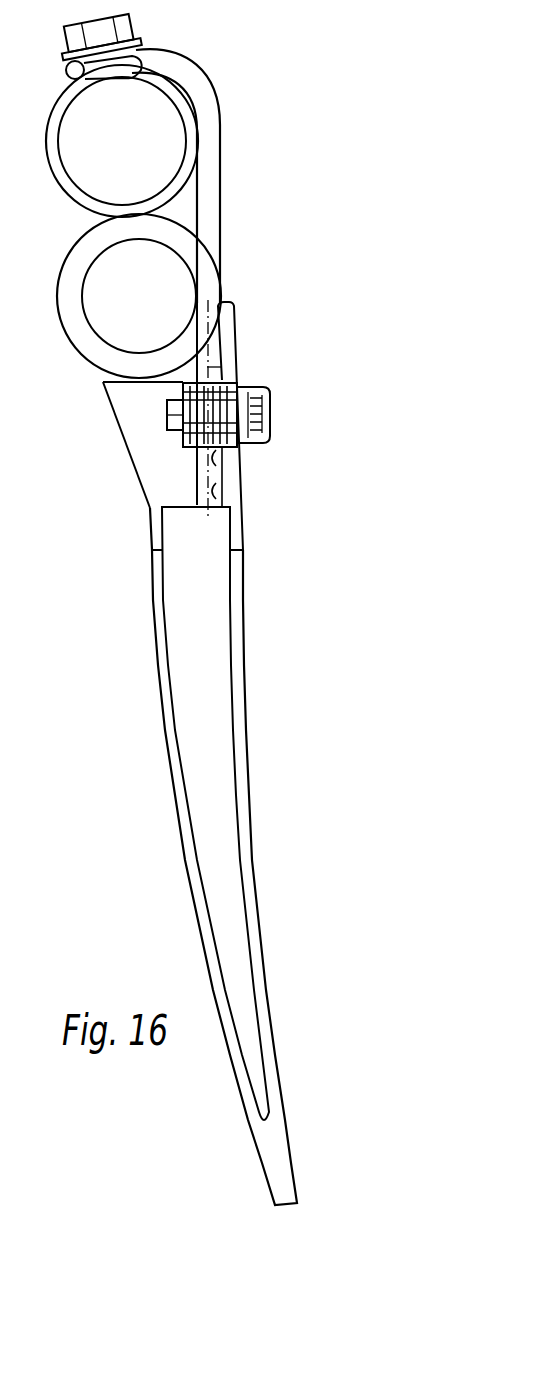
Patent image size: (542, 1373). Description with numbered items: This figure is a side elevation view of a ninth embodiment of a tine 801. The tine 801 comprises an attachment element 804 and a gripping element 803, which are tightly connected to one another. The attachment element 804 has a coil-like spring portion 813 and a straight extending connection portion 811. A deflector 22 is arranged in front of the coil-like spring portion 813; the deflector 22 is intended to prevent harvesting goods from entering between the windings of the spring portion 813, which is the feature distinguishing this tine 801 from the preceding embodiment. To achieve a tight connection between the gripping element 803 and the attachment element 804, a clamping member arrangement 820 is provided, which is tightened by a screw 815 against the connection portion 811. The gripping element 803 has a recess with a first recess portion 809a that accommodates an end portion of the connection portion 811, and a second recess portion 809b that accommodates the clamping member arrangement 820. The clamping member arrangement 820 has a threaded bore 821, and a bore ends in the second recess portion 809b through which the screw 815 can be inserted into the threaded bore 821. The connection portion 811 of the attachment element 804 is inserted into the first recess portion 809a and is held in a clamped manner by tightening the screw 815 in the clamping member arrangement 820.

The tine 801 is at (447, 213).
The attachment element 804 is at (238, 218).
The coil-like spring portion 813 is at (200, 267).
The deflector 22 is at (225, 350).
The connection portion 811 is at (212, 363).
The screw 815 is at (366, 367).
The clamping member arrangement 820 is at (197, 448).
The threaded bore 821 is at (173, 422).
The second recess portion 809b is at (217, 463).
The first recess portion 809a is at (217, 500).
The gripping element 803 is at (262, 688).